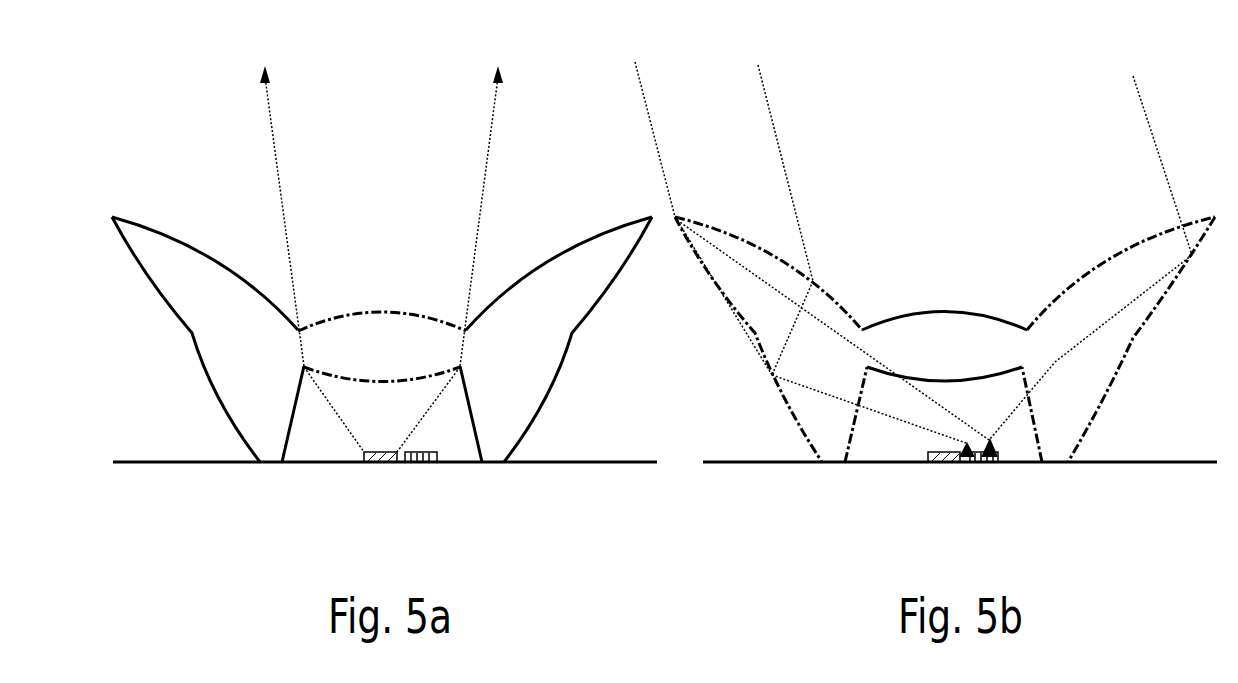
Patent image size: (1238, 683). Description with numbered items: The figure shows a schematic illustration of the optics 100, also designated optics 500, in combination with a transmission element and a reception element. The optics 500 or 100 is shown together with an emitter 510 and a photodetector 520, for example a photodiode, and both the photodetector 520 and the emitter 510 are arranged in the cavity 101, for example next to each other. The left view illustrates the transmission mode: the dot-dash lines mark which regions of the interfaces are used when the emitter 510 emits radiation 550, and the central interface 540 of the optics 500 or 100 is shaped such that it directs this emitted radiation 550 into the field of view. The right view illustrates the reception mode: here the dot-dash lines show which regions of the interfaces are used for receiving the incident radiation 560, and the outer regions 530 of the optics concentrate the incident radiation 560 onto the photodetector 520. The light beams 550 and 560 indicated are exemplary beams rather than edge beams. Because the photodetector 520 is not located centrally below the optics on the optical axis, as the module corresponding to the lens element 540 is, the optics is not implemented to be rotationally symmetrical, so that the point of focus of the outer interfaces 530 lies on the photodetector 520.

In FIG. 5A, the optics 100 is at (385, 285).
In FIG. 5B, the optics 100 is at (931, 336).
In FIG. 5A, the cavity 101 is at (452, 433).
In FIG. 5A, the optics 500 is at (385, 285).
In FIG. 5A, the emitter 510 is at (380, 462).
In FIG. 5B, the emitter 510 is at (947, 462).
In FIG. 5A, the photodetector 520 is at (418, 462).
In FIG. 5B, the photodetector 520 is at (985, 462).
In FIG. 5A, the outer regions 530 is at (215, 392).
In FIG. 5B, the outer regions 530 is at (736, 316).
In FIG. 5A, the central interface 540 is at (408, 380).
In FIG. 5B, the central interface 540 is at (997, 375).
In FIG. 5A, the emitted radiation 550 is at (499, 122).
In FIG. 5B, the incident radiation 560 is at (758, 80).